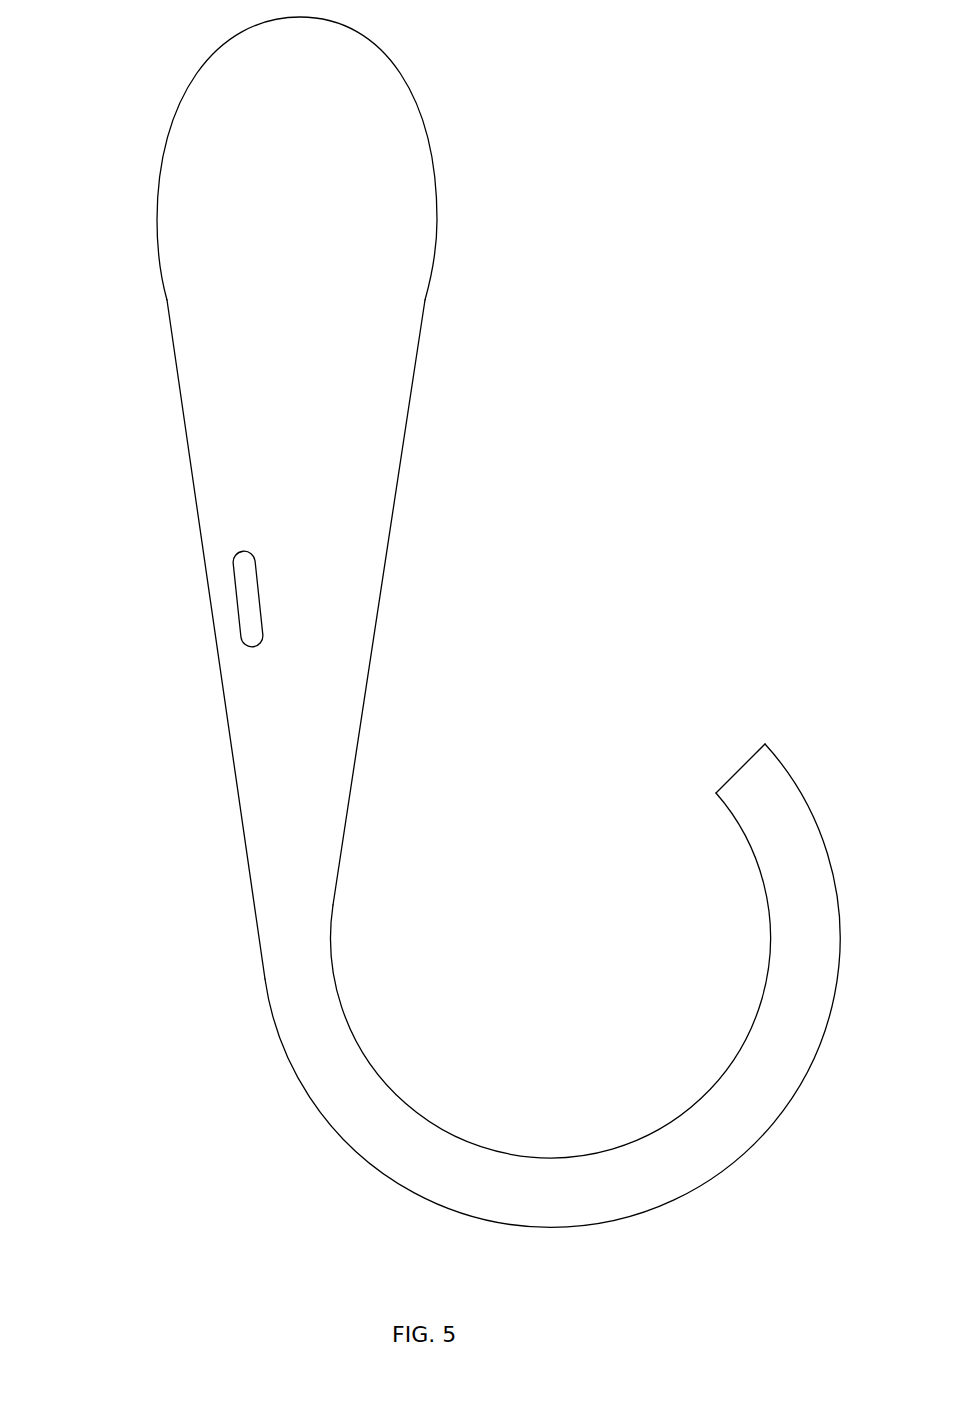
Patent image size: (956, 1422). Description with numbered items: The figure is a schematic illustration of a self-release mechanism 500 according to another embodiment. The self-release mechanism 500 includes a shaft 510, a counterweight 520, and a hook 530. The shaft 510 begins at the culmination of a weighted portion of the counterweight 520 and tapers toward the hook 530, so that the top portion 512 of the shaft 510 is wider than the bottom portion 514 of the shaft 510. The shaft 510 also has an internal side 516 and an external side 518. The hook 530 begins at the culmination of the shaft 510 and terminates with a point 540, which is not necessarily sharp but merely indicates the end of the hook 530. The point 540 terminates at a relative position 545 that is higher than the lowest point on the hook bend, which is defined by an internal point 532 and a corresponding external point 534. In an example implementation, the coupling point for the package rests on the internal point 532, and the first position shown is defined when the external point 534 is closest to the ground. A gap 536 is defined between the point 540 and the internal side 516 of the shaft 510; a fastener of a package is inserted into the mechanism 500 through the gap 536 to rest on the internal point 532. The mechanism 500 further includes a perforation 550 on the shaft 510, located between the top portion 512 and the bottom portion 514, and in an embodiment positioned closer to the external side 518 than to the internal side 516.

The self-release mechanism 500 is at (434, 654).
The shaft 510 is at (257, 639).
The top portion 512 is at (177, 318).
The bottom portion 514 is at (297, 720).
The internal side 516 is at (409, 602).
The external side 518 is at (198, 639).
The counterweight 520 is at (142, 17).
The hook 530 is at (513, 972).
The internal point 532 is at (551, 975).
The external point 534 is at (552, 1232).
The gap 536 is at (715, 793).
The point 540 is at (765, 723).
The relative position 545 is at (560, 1157).
The perforation 550 is at (199, 628).